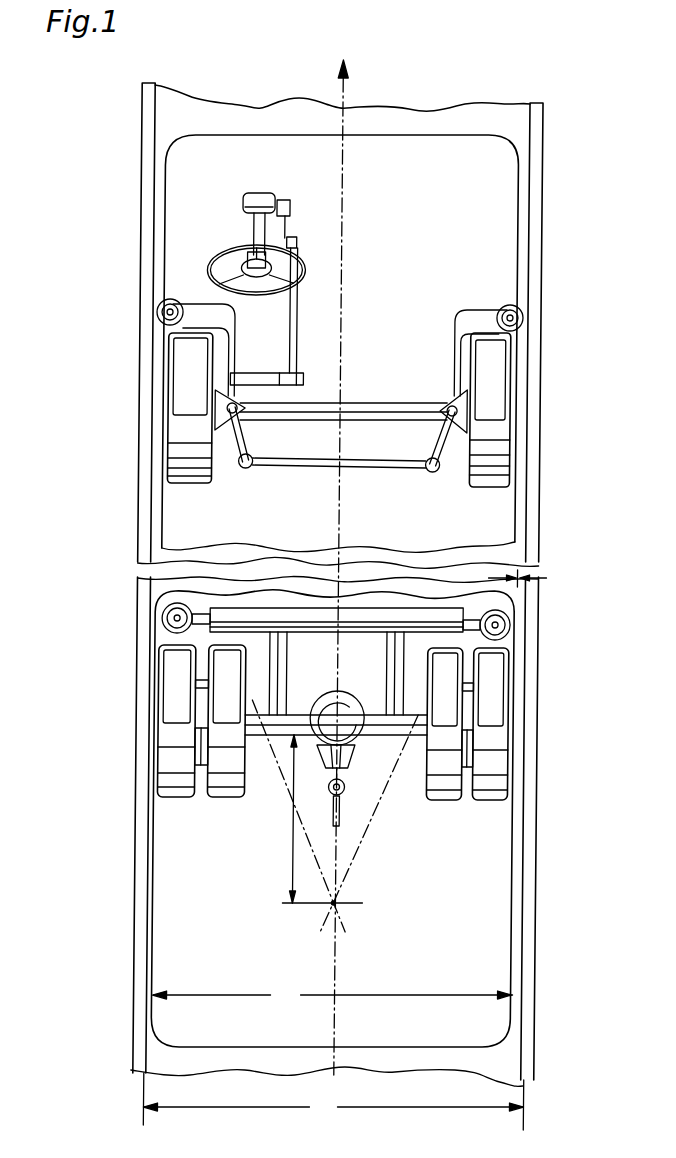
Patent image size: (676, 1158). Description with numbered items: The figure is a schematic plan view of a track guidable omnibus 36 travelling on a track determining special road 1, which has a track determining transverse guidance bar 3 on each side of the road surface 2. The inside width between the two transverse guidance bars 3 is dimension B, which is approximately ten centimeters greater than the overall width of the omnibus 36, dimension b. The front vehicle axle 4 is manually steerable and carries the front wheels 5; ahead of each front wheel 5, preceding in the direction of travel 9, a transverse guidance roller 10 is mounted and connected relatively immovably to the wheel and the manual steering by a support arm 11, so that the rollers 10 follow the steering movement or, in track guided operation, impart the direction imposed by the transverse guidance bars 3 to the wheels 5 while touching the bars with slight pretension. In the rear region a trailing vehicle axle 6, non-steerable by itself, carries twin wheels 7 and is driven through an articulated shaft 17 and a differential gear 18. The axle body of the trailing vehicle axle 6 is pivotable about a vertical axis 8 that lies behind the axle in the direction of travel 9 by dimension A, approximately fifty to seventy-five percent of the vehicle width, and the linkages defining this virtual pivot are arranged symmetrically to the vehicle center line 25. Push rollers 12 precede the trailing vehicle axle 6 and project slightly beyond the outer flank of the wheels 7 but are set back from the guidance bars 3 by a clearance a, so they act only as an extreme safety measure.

The track determining special road 1 is at (337, 555).
The road surface 2 is at (254, 110).
The transverse guidance bars 3 is at (158, 118).
The front vehicle axle 4 is at (382, 400).
The front wheels 5 is at (195, 457).
The trailing vehicle axle 6 is at (305, 710).
The twin wheels 7 is at (226, 792).
The vertical axis 8 is at (338, 907).
The direction of travel 9 is at (346, 92).
The transverse guidance rollers 10 is at (161, 307).
The support arm 11 is at (230, 320).
The push rollers 12 is at (170, 622).
The articulated shaft 17 is at (351, 809).
The differential gear 18 is at (357, 711).
The vehicle center line 25 is at (344, 947).
The track guidable omnibus 36 is at (524, 183).
The dimension A is at (301, 840).
The dimension B is at (333, 1101).
The clearance a is at (523, 578).
The dimension b is at (332, 995).